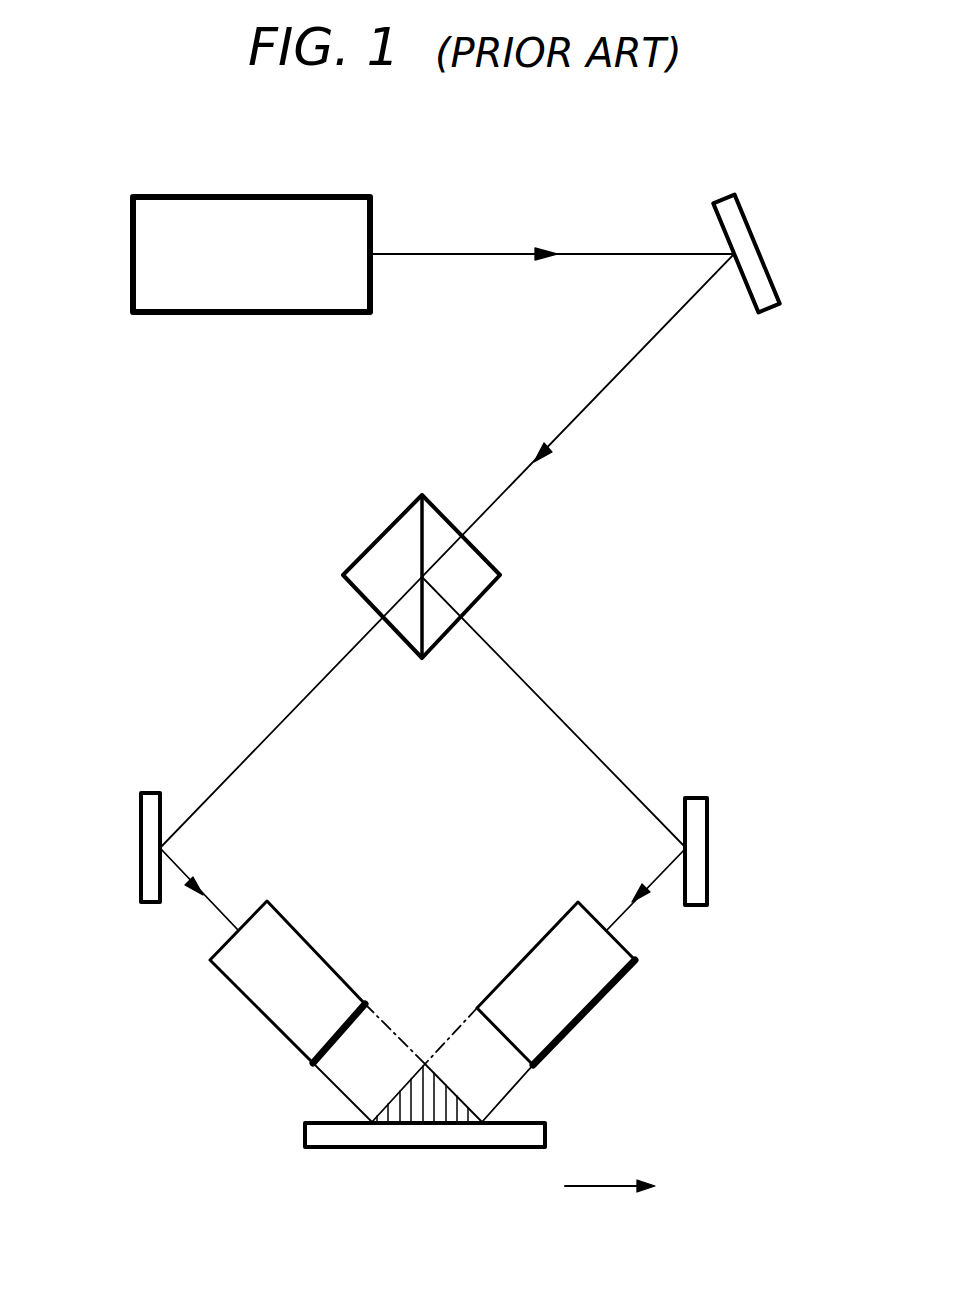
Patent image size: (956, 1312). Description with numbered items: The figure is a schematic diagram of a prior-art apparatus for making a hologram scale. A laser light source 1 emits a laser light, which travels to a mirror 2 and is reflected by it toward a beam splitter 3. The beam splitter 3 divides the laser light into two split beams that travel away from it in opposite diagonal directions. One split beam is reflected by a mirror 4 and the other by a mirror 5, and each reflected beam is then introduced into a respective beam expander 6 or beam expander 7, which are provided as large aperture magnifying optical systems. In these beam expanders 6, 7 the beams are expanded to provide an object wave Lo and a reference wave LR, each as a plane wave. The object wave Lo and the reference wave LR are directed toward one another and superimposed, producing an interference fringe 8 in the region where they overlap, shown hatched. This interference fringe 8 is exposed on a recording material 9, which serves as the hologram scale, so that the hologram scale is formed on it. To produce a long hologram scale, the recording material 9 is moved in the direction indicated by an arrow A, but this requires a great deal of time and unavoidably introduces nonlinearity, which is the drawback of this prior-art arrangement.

The laser light source 1 is at (252, 197).
The mirror 2 is at (758, 237).
The beam splitter 3 is at (500, 575).
The mirror 4 is at (141, 812).
The mirror 5 is at (707, 815).
The beam expander 6 is at (305, 952).
The beam expander 7 is at (607, 982).
The interference fringe 8 is at (397, 1113).
The recording material 9 is at (468, 1147).
The object wave Lo is at (353, 1073).
The reference wave LR is at (502, 1075).
The arrow A is at (603, 1186).